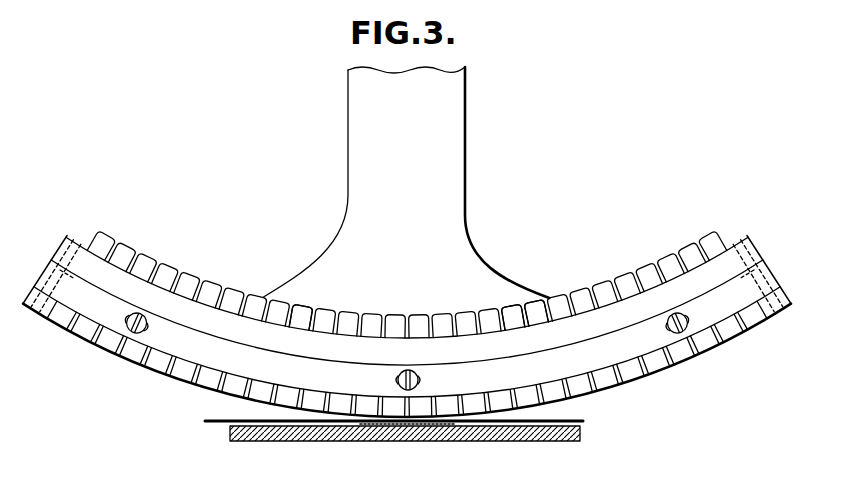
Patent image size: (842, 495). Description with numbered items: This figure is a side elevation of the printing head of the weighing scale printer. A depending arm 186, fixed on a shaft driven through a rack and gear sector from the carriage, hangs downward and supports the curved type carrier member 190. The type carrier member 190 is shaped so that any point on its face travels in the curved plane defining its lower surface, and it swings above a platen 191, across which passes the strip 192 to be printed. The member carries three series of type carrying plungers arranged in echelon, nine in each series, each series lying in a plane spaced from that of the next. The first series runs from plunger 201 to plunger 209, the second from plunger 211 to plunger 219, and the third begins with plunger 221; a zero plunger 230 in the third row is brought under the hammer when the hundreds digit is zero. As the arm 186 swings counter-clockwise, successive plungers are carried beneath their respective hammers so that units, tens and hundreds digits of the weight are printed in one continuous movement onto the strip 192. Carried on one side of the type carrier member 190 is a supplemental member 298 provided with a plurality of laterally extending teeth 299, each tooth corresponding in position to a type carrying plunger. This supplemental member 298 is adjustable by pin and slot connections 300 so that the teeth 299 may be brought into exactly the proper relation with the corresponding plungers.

The depending arm 186 is at (463, 166).
The type carrier member 190 is at (748, 252).
The platen 191 is at (292, 433).
The strip 192 is at (375, 427).
The type carrying plunger 201 is at (722, 228).
The type carrying plunger 209 is at (535, 308).
The type carrying plunger 211 is at (515, 318).
The type carrying plunger 219 is at (318, 320).
The type carrying plunger 221 is at (294, 316).
The zero plunger 230 is at (93, 236).
The supplemental member 298 is at (612, 348).
The teeth 299 is at (677, 343).
The pin and slot connections 300 is at (418, 386).